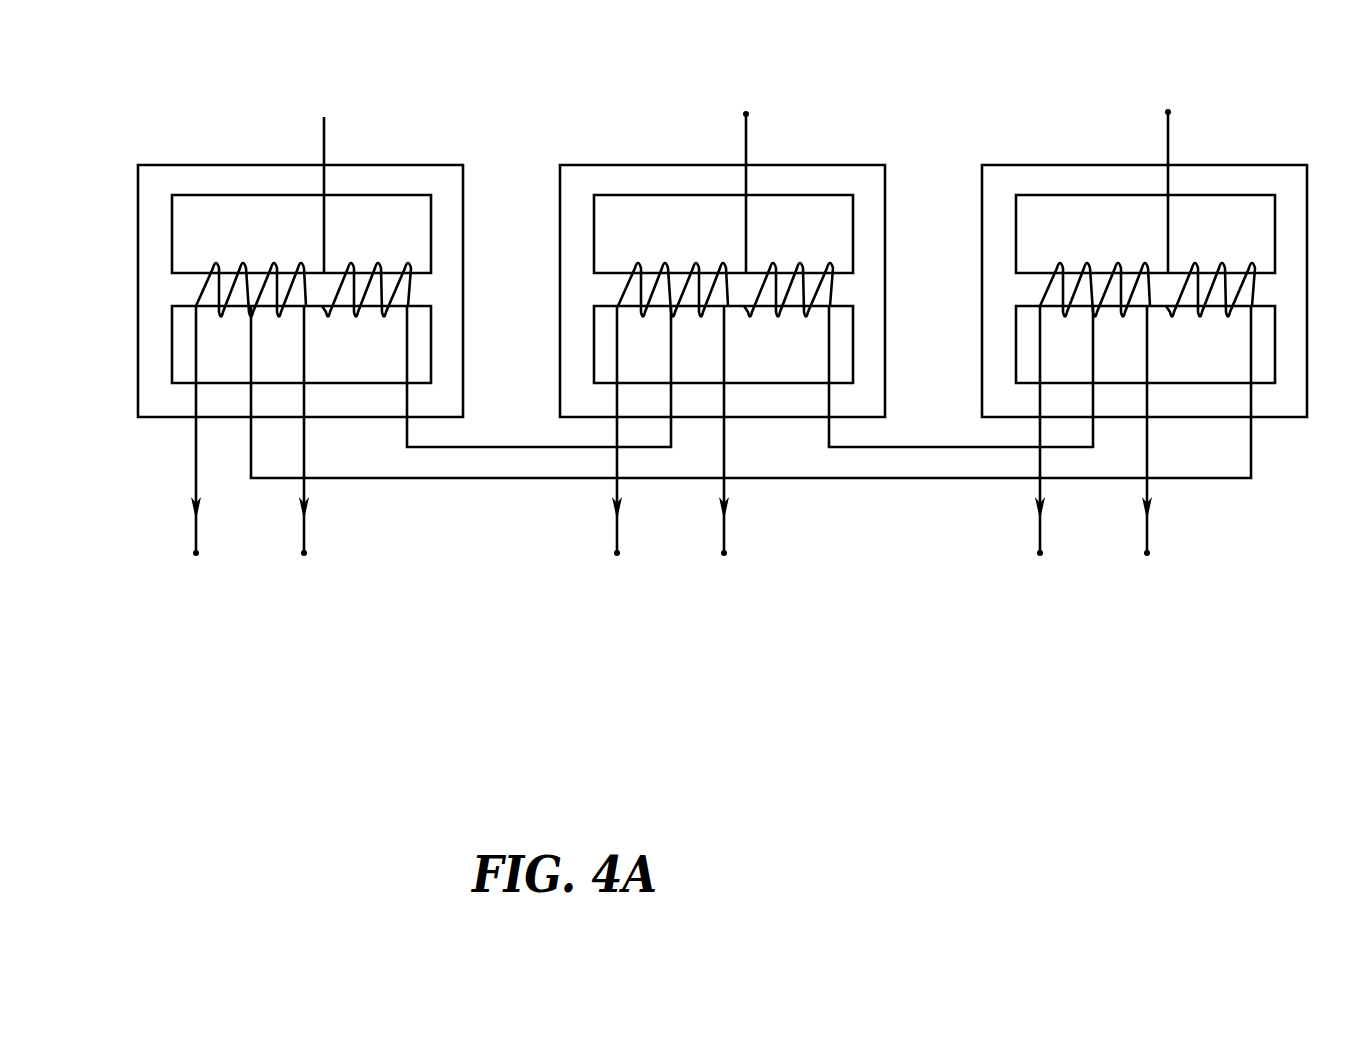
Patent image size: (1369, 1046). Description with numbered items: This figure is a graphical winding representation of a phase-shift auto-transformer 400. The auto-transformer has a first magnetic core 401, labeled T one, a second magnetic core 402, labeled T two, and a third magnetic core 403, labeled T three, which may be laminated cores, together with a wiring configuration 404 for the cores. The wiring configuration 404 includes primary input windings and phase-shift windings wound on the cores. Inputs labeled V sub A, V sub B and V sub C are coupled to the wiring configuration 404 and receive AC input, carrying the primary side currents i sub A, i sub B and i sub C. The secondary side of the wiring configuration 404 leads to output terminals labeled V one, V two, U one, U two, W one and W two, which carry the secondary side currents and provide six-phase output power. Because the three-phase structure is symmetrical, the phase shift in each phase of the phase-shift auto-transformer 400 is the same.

The phase-shift auto-transformer 400 is at (183, 84).
The first magnetic core 401 is at (450, 165).
The second magnetic core 402 is at (865, 165).
The third magnetic core 403 is at (1296, 165).
The wiring configuration 404 is at (480, 505).